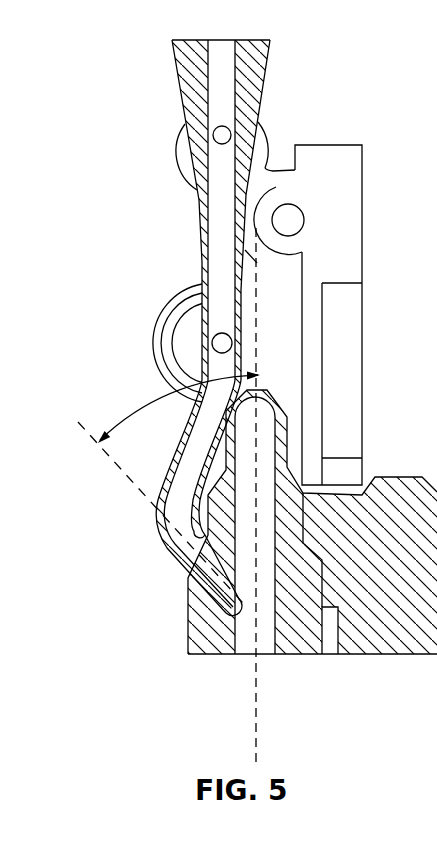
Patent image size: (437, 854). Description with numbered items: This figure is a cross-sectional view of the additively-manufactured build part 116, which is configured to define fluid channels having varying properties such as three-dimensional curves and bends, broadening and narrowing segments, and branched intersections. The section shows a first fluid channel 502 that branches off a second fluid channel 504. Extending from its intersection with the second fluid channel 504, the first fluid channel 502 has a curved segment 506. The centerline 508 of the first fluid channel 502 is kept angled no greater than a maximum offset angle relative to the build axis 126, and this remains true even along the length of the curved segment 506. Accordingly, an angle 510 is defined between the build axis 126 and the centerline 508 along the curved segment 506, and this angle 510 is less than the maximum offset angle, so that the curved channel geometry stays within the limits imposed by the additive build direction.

The build part 116 is at (183, 70).
The first fluid channel 502 is at (217, 217).
The second fluid channel 504 is at (247, 633).
The curved segment 506 is at (155, 533).
The centerline 508 is at (138, 487).
The angle 510 is at (118, 412).
The build axis 126 is at (257, 703).